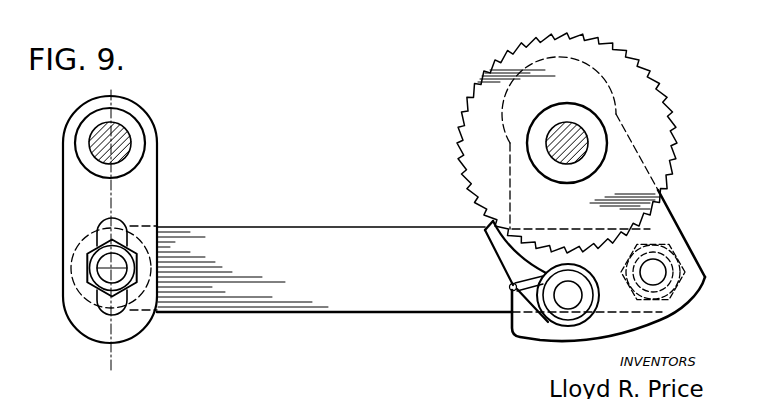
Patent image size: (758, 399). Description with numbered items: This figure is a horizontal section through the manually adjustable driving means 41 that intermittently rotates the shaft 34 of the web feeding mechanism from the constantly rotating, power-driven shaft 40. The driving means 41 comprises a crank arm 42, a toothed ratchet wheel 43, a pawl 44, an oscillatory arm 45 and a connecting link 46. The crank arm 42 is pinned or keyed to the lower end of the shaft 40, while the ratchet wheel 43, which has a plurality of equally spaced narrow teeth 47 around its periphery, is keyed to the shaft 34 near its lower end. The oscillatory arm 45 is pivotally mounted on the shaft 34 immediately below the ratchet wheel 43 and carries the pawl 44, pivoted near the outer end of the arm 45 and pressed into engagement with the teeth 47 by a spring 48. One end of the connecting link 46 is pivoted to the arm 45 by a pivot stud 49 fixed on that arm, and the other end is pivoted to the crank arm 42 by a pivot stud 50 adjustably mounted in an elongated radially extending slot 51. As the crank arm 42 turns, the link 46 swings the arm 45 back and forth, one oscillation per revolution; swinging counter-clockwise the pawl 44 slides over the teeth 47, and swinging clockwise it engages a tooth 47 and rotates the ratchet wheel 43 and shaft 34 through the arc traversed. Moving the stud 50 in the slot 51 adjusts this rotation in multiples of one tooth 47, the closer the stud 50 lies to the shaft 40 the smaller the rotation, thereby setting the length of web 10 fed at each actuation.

The web 10 is at (98, 85).
The shaft 34 is at (571, 122).
The constantly rotating shaft 40 is at (125, 132).
The manually adjustable driving means 41 is at (372, 314).
The crank arm 42 is at (157, 199).
The toothed ratchet wheel 43 is at (514, 58).
The pawl 44 is at (500, 263).
The oscillatory arm 45 is at (672, 217).
The connecting link 46 is at (345, 238).
The teeth 47 is at (478, 207).
The spring 48 is at (511, 292).
The pivot stud 49 is at (668, 262).
The pivot stud 50 is at (108, 266).
The elongated radially extending slot 51 is at (112, 316).